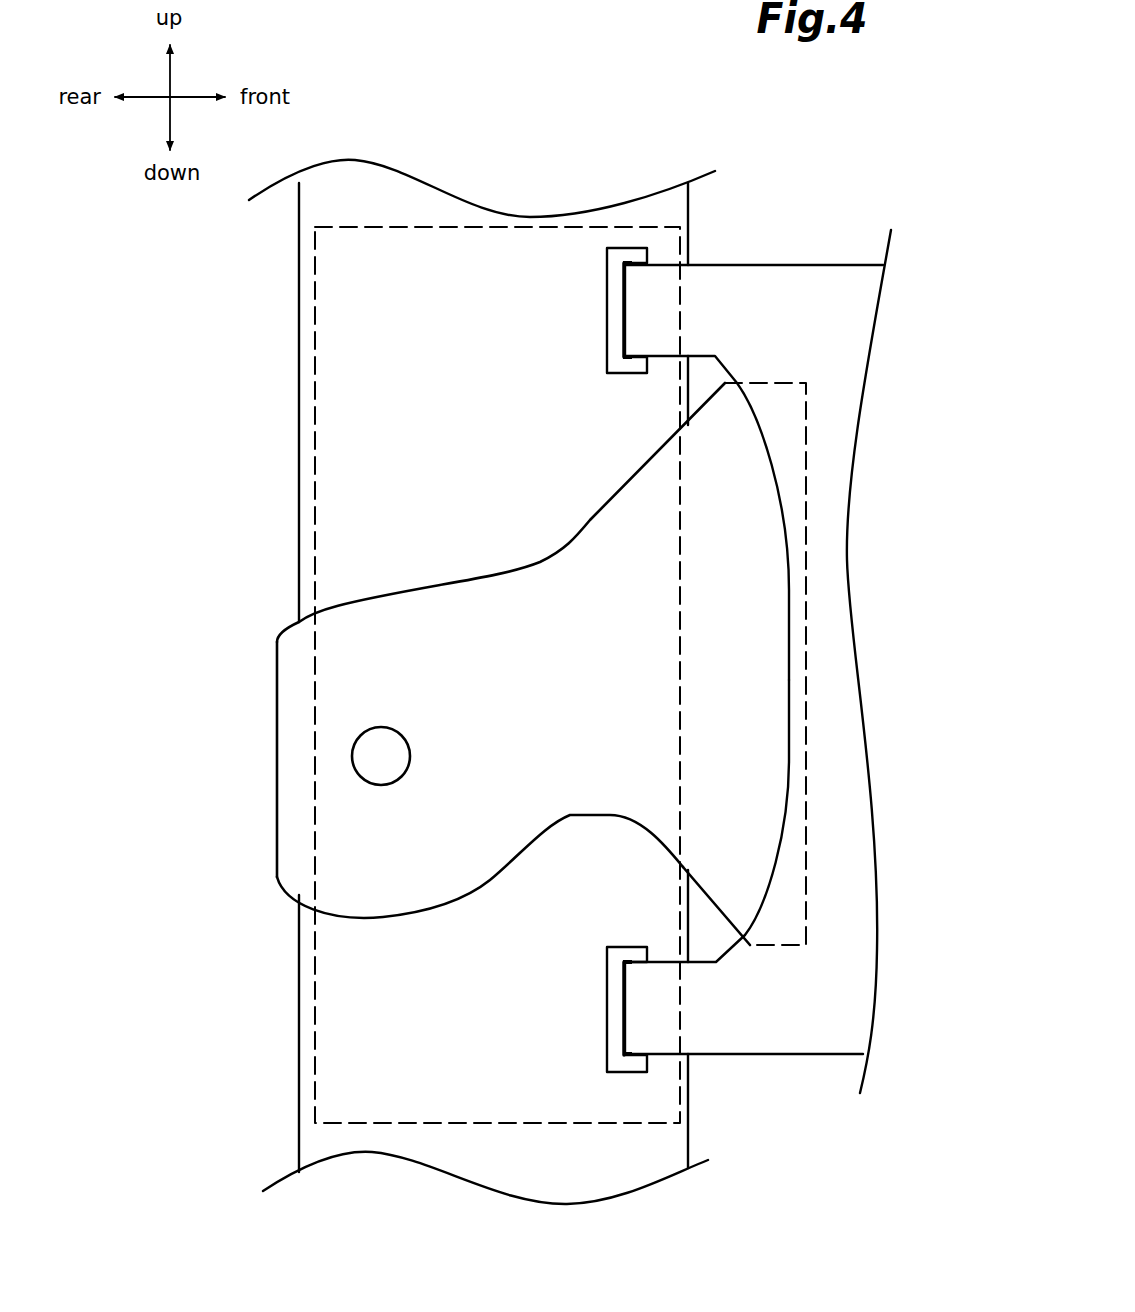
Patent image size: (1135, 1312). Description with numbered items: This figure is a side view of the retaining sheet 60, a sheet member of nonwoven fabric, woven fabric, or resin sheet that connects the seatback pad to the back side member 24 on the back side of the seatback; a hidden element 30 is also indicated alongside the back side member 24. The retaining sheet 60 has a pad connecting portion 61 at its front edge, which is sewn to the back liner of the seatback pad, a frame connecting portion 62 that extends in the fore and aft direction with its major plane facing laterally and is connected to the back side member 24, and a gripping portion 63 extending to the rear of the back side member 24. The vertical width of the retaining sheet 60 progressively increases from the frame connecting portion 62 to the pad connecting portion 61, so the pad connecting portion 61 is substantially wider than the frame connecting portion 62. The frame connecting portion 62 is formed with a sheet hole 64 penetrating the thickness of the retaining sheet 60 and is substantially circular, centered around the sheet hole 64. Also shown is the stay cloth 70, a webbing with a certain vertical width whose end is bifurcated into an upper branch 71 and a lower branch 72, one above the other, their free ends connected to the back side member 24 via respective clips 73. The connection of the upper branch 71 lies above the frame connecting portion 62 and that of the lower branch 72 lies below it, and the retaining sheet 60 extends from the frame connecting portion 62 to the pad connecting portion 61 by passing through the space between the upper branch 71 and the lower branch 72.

The back side member 24 is at (298, 1138).
The panel 30 is at (313, 412).
The retaining sheet 60 is at (458, 698).
The pad connecting portion 61 is at (807, 478).
The frame connecting portion 62 is at (387, 888).
The gripping portion 63 is at (285, 826).
The sheet hole 64 is at (370, 773).
The stay cloth 70 is at (747, 697).
The upper branch 71 is at (698, 280).
The lower branch 72 is at (695, 1037).
The clip 73 is at (615, 262).